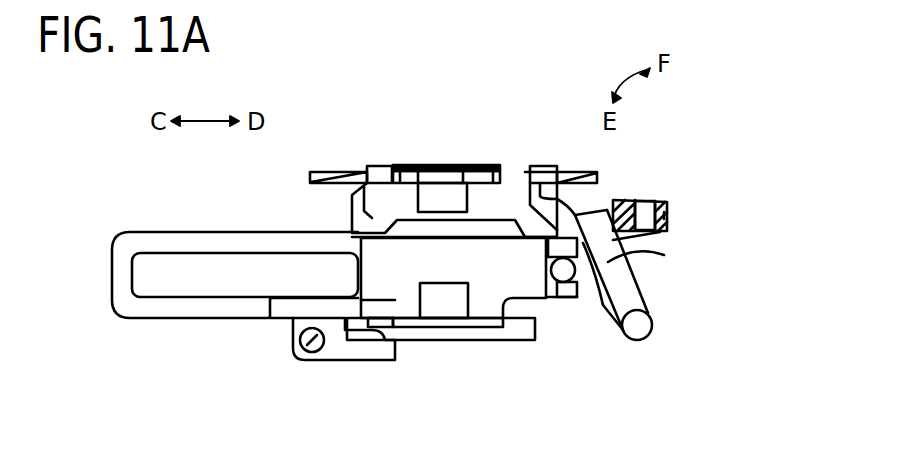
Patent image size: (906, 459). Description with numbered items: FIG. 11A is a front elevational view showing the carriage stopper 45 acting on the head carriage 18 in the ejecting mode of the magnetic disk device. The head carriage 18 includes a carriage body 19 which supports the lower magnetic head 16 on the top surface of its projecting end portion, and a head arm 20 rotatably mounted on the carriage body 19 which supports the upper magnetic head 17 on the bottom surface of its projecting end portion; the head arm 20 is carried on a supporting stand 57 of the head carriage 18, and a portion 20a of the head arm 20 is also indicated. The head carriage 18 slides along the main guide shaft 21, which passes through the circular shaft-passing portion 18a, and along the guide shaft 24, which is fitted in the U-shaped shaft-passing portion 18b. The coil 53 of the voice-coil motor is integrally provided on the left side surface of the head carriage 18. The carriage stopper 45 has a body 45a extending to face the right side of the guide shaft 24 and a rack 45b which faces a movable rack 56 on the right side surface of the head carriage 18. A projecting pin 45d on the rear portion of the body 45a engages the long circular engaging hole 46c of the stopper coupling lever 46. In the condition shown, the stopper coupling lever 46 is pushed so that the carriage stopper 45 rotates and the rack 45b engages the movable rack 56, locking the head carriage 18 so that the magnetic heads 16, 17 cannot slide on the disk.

The lower magnetic head 16 is at (458, 303).
The upper magnetic head 17 is at (445, 183).
The head carriage 18 is at (508, 346).
The shaft-passing portion 18a is at (348, 353).
The shaft-passing portion 18b is at (602, 306).
The carriage body 19 is at (442, 333).
The head arm 20 is at (387, 167).
The cover plate portion 20a is at (572, 171).
The main guide shaft 21 is at (292, 347).
The guide shaft 24 is at (557, 288).
The carriage stopper 45 is at (650, 280).
The body 45a is at (664, 255).
The rack 45b is at (542, 172).
The projecting pin 45d is at (645, 200).
The stopper coupling lever 46 is at (630, 200).
The engaging hole 46c is at (668, 215).
The coil 53 is at (207, 233).
The movable rack 56 is at (568, 284).
The supporting stand 57 is at (407, 283).